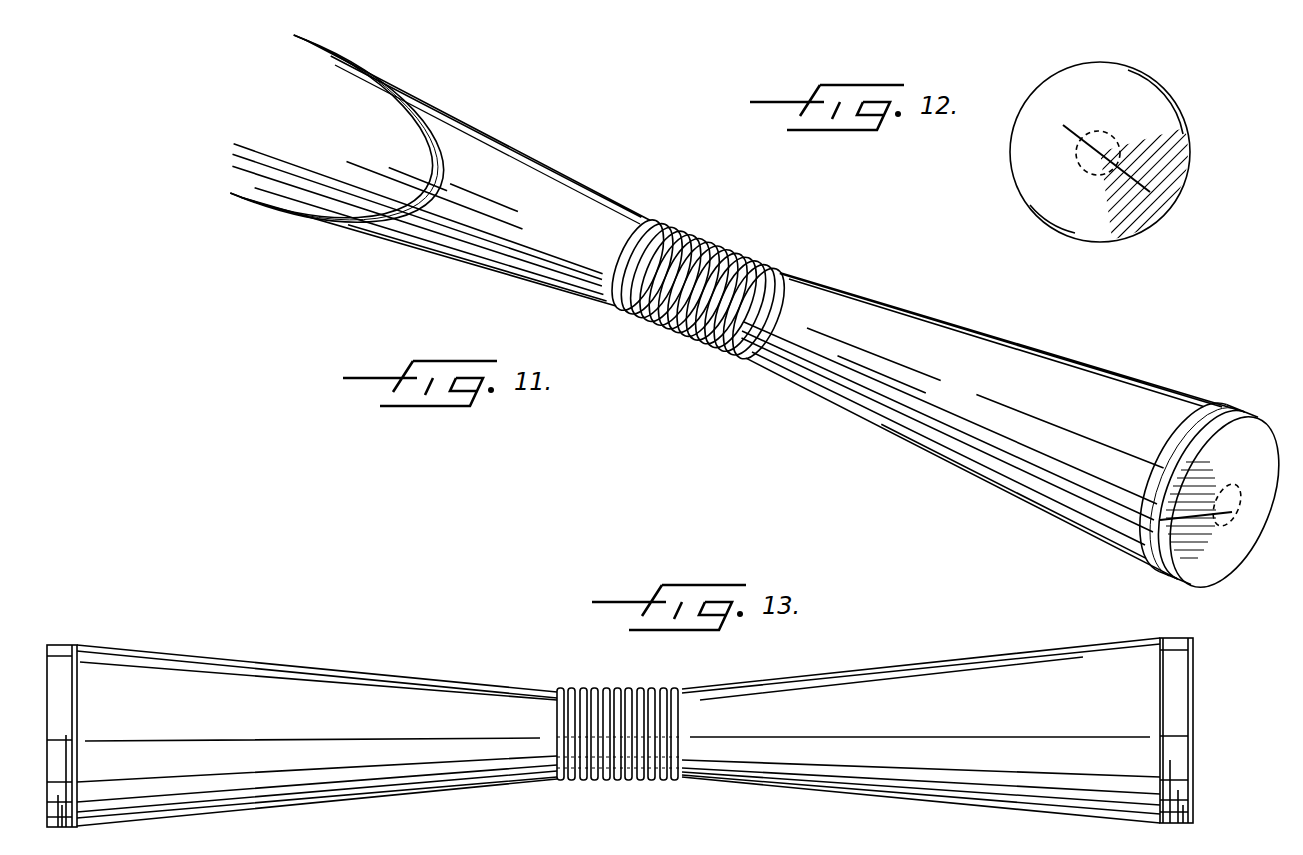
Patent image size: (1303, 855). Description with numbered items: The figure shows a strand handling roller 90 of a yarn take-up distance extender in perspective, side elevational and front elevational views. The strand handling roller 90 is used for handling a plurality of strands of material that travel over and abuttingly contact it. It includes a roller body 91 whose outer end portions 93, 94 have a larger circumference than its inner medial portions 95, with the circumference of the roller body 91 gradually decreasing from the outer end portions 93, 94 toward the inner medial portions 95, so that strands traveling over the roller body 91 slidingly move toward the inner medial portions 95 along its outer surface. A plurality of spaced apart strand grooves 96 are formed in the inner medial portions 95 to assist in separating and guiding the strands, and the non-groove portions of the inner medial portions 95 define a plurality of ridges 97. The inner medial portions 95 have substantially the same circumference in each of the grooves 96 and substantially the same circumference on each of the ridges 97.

In FIG. 11, the strand handling roller 90 is at (639, 176).
In FIG. 12, the strand handling roller 90 is at (1151, 154).
In FIG. 13, the strand handling roller 90 is at (404, 617).
In FIG. 11, the roller body 91 is at (310, 155).
In FIG. 13, the roller body 91 is at (65, 667).
In FIG. 11, the outer end portion 93 is at (441, 97).
In FIG. 13, the outer end portion 93 is at (166, 638).
In FIG. 11, the outer end portion 94 is at (1208, 379).
In FIG. 12, the outer end portion 94 is at (1190, 110).
In FIG. 13, the outer end portion 94 is at (1066, 638).
In FIG. 11, the inner medial portions 95 is at (766, 237).
In FIG. 13, the inner medial portions 95 is at (636, 791).
In FIG. 11, the strand grooves 96 is at (725, 347).
In FIG. 13, the strand grooves 96 is at (578, 779).
In FIG. 11, the ridges 97 is at (763, 273).
In FIG. 13, the ridges 97 is at (594, 690).